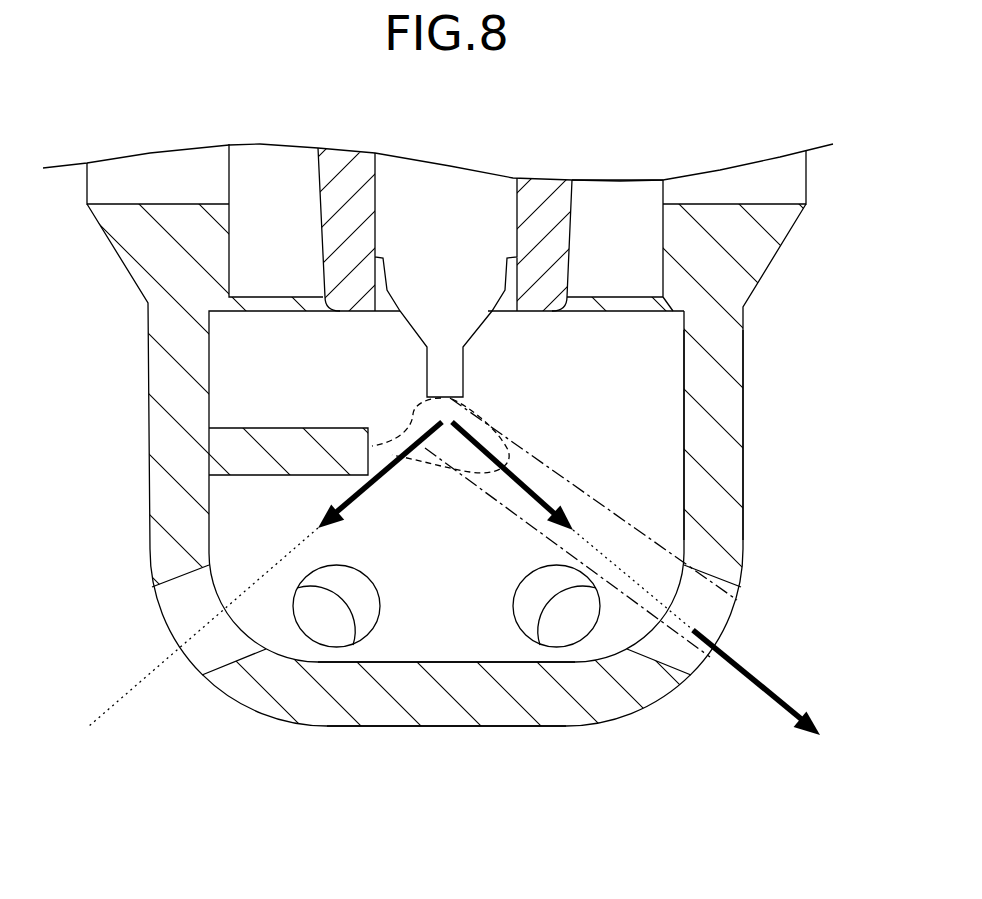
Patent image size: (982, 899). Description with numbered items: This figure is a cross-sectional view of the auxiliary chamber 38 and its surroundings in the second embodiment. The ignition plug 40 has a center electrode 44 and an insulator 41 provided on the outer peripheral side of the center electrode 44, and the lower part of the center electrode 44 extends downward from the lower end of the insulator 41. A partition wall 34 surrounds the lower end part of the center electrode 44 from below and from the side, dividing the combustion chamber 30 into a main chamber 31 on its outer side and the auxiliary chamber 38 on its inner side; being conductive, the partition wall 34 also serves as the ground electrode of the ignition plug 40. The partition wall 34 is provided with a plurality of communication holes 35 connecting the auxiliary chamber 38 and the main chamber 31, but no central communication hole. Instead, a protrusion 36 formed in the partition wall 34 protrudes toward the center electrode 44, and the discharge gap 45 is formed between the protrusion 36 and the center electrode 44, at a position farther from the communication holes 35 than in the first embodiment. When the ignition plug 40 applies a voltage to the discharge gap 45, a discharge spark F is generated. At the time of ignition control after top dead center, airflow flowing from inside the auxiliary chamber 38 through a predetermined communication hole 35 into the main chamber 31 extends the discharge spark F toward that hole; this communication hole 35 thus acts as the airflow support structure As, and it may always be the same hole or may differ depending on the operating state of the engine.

The combustion chamber 30 is at (491, 466).
The main chamber 31 is at (491, 466).
The partition wall 34 is at (493, 712).
The communication hole 35 is at (340, 578).
The protrusion 36 is at (288, 447).
The auxiliary chamber 38 is at (683, 392).
The ignition plug 40 is at (348, 140).
The insulator 41 is at (540, 188).
The center electrode 44 is at (450, 378).
The discharge gap 45 is at (388, 425).
The discharge spark F is at (545, 455).
The airflow support structure As is at (728, 593).